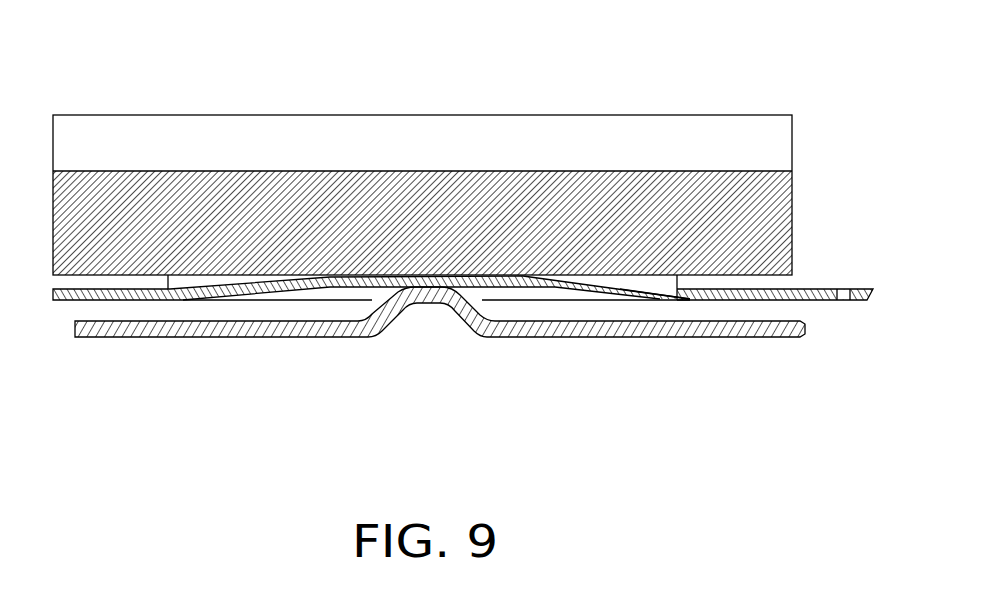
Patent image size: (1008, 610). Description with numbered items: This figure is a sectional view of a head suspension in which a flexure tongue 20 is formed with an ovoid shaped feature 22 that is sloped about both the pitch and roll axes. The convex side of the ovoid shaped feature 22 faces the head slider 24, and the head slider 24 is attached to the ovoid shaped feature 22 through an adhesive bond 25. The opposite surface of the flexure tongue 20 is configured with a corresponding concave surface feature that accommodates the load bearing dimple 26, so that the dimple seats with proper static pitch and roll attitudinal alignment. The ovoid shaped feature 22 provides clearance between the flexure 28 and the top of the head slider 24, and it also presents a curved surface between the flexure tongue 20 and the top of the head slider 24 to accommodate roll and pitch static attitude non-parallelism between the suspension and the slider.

The flexure tongue 20 is at (52, 293).
The ovoid shaped feature 22 is at (232, 290).
The head slider 24 is at (98, 215).
The adhesive bond 25 is at (657, 286).
The load bearing dimple 26 is at (435, 303).
The flexure 28 is at (863, 289).